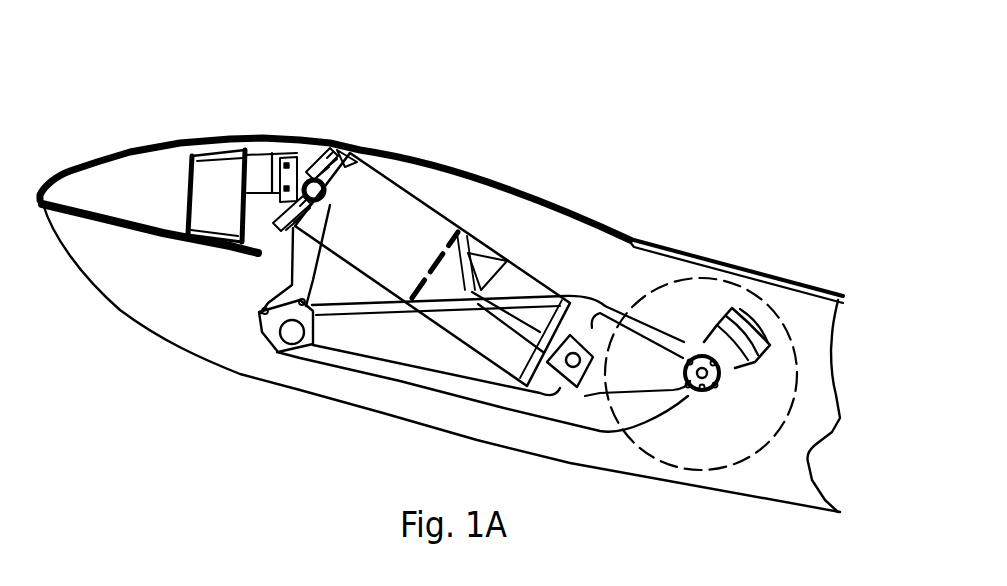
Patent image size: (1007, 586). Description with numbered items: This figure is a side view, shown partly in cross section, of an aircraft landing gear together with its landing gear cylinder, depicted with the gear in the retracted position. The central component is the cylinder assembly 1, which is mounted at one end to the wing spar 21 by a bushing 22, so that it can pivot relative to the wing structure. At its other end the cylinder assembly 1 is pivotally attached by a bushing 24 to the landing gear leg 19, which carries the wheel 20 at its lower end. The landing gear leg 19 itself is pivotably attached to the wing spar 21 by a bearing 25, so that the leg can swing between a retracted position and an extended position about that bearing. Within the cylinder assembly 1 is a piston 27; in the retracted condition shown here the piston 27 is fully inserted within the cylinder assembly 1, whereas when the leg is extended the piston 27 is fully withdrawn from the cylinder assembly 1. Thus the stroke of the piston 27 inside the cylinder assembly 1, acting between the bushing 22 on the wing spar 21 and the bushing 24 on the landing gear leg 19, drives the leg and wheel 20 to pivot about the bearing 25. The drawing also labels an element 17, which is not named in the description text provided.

The cylinder assembly 1 is at (493, 238).
The support bracket / lever arm 17 is at (272, 140).
The landing gear leg 19 is at (391, 378).
The wheel 20 is at (795, 397).
The wing spar 21 is at (212, 140).
The bushing 22 is at (307, 140).
The bushing 24 is at (571, 385).
The bearing 25 is at (292, 332).
The piston 27 is at (505, 258).